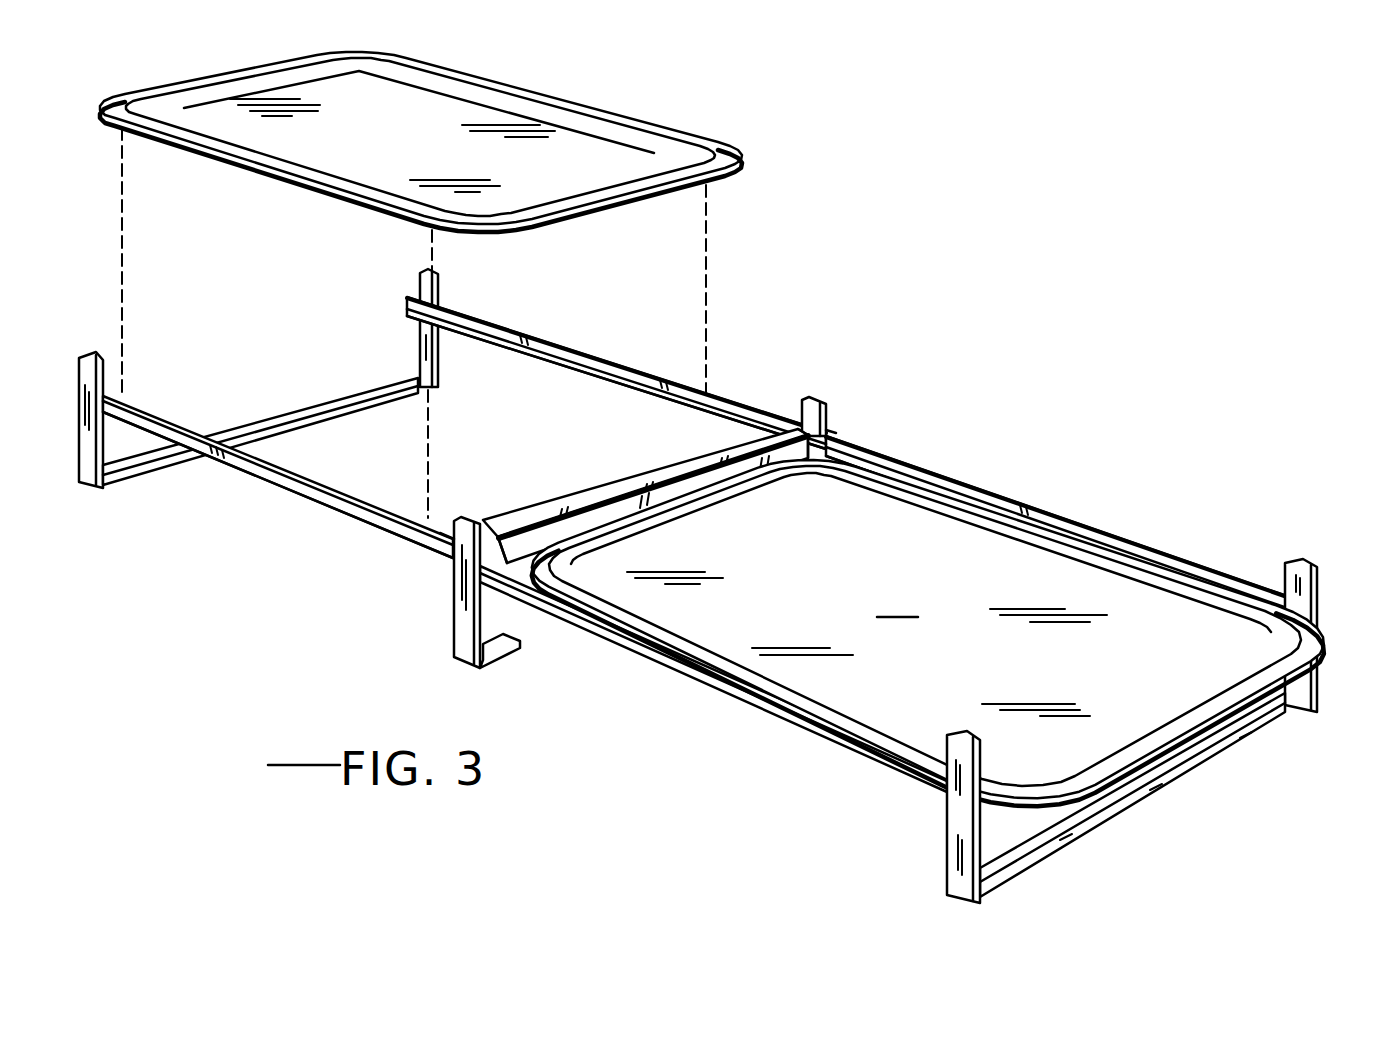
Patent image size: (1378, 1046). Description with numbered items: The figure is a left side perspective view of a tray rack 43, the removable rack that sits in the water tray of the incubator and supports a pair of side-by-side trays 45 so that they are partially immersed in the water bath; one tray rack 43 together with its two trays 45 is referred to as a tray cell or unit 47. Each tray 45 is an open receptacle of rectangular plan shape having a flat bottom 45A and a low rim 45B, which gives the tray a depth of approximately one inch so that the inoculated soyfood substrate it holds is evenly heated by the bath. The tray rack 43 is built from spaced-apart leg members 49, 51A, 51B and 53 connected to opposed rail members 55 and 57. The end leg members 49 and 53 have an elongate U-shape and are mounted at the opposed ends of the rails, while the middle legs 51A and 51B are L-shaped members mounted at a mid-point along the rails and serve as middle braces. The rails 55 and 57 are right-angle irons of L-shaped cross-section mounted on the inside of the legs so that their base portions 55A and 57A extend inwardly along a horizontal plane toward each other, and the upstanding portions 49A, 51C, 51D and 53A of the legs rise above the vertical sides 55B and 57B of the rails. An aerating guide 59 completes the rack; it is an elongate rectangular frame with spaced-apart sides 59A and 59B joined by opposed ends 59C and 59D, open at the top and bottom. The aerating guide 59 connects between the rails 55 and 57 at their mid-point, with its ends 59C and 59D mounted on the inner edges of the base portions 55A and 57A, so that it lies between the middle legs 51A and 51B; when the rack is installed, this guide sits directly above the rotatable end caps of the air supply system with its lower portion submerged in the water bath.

The tray rack 43 is at (698, 569).
The tray 45 is at (700, 414).
The flat bottom 45A is at (600, 162).
The low rim 45B is at (557, 98).
The tray cell or unit 47 is at (663, 503).
The end leg member 49 is at (306, 397).
The upstanding portion 49A is at (103, 363).
The middle leg 51A is at (460, 620).
The middle leg 51B is at (830, 422).
The upstanding portion 51C is at (433, 527).
The upstanding portion 51D is at (810, 393).
The end leg member 53 is at (1076, 700).
The upstanding portion 53A is at (1310, 560).
The rail member 55 is at (525, 614).
The base portion 55A is at (947, 813).
The vertical side 55B is at (258, 474).
The rail member 57 is at (848, 448).
The base portion 57A is at (617, 318).
The vertical side 57B is at (497, 325).
The aerating guide 59 is at (645, 518).
The side 59A is at (597, 490).
The side 59B is at (697, 487).
The end 59C is at (783, 417).
The end 59D is at (503, 590).